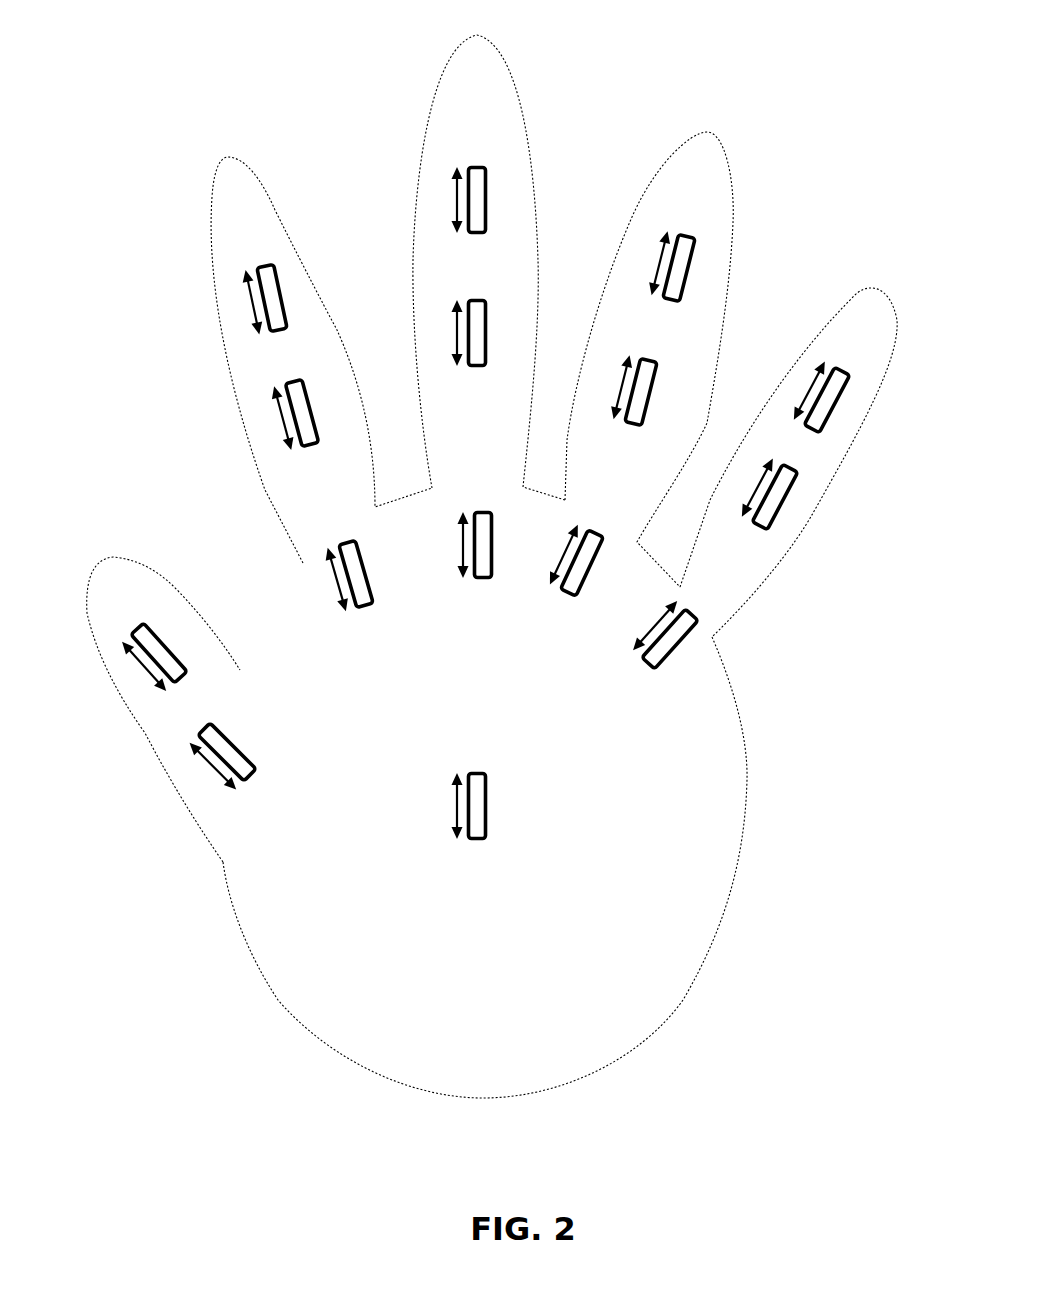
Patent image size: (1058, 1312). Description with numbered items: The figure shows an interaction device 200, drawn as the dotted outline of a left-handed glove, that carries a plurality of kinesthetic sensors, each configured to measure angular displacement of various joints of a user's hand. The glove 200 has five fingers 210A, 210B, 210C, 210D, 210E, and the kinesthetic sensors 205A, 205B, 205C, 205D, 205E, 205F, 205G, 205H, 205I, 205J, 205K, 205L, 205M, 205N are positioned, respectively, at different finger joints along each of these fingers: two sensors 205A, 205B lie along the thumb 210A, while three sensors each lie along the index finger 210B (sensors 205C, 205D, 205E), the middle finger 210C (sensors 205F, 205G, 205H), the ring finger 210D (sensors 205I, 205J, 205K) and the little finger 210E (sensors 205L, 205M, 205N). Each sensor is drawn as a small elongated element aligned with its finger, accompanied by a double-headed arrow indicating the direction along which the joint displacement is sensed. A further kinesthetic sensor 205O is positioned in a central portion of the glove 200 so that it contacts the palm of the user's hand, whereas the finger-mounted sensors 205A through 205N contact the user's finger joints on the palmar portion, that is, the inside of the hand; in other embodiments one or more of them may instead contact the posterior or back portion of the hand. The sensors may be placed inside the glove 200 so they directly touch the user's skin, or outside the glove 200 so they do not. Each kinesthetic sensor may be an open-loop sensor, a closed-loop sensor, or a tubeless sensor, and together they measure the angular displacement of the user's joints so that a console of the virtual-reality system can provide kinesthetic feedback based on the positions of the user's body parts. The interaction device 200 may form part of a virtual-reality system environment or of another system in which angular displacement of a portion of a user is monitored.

The interaction device 200 is at (133, 46).
The kinesthetic sensor 205A is at (157, 631).
The kinesthetic sensor 205B is at (238, 746).
The kinesthetic sensor 205C is at (267, 264).
The kinesthetic sensor 205D is at (308, 383).
The kinesthetic sensor 205E is at (347, 536).
The kinesthetic sensor 205F is at (476, 163).
The kinesthetic sensor 205G is at (477, 298).
The kinesthetic sensor 205H is at (482, 510).
The kinesthetic sensor 205I is at (688, 233).
The kinesthetic sensor 205J is at (650, 357).
The kinesthetic sensor 205K is at (602, 533).
The kinesthetic sensor 205L is at (842, 371).
The kinesthetic sensor 205M is at (783, 503).
The kinesthetic sensor 205N is at (677, 648).
The kinesthetic sensor 205O is at (477, 770).
The finger 210A is at (148, 732).
The finger 210B is at (267, 360).
The finger 210C is at (487, 128).
The finger 210D is at (717, 217).
The finger 210E is at (865, 348).